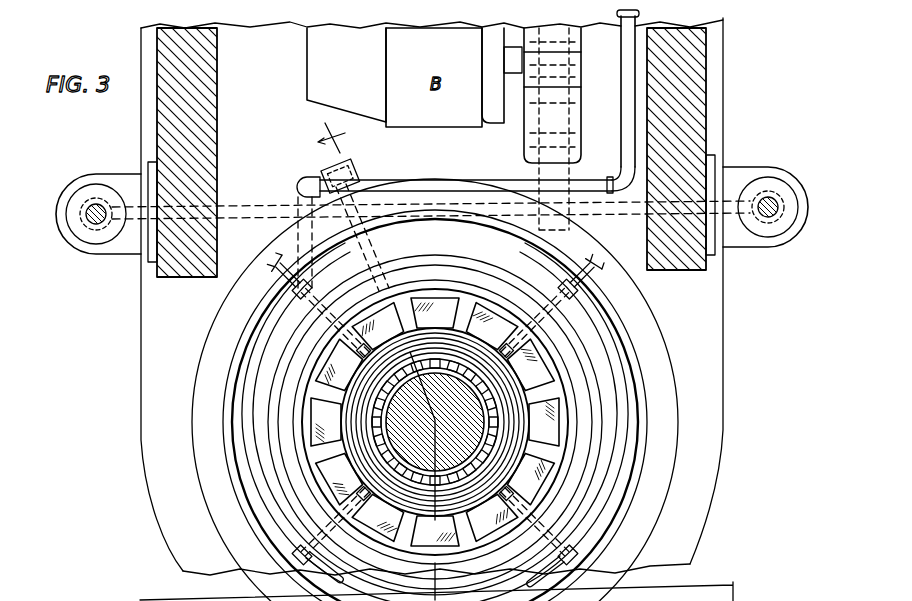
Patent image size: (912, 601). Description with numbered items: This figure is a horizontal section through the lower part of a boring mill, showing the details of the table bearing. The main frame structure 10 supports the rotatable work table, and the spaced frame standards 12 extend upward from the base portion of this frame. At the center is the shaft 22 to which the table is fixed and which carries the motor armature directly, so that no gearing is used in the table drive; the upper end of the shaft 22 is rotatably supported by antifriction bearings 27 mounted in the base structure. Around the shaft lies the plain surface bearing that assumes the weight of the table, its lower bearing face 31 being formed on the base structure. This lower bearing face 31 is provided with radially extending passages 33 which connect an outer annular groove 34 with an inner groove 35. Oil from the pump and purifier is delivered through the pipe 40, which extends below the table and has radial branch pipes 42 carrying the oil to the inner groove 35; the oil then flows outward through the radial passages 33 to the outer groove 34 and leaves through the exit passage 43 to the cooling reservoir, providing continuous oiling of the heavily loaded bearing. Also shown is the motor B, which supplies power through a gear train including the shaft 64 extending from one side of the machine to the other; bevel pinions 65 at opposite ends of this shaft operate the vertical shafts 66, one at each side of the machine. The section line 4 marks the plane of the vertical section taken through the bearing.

The section line 4- 4 is at (370, 362).
The main frame structure 10 is at (150, 400).
The frame standards 12 is at (172, 116).
The shaft 22 is at (470, 424).
The antifriction bearings 27 is at (529, 476).
The lower bearing face 31 is at (435, 422).
The radial passages 33 is at (385, 442).
The outer annular groove 34 is at (489, 328).
The inner groove 35 is at (380, 328).
The oil pipe 40 is at (501, 188).
The radial branch pipes 42 is at (552, 290).
The exit passage 43 is at (383, 241).
The shaft 64 is at (285, 201).
The bevel pinions 65 is at (118, 243).
The vertical shafts 66 is at (93, 224).
The motor B is at (444, 129).